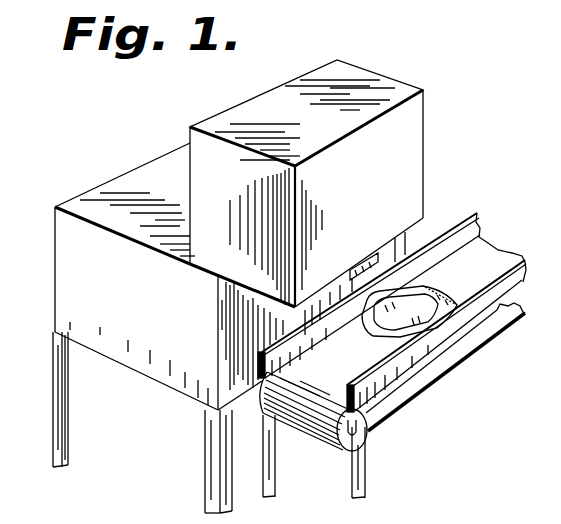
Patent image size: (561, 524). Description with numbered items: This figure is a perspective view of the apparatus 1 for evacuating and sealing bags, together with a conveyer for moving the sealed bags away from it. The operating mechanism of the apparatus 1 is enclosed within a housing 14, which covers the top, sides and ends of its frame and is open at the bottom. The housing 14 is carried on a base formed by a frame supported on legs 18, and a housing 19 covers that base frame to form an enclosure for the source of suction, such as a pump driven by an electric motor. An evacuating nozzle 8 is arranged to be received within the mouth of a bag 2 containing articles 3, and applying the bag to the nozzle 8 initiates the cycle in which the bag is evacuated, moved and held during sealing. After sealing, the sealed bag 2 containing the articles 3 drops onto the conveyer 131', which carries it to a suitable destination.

The apparatus 1 is at (427, 128).
The bag 2 is at (430, 298).
The articles 3 is at (407, 323).
The evacuating nozzle 8 is at (367, 257).
The housing 14 is at (362, 78).
The legs 18 is at (60, 400).
The housing 19 is at (68, 275).
The conveyer 131' is at (313, 423).